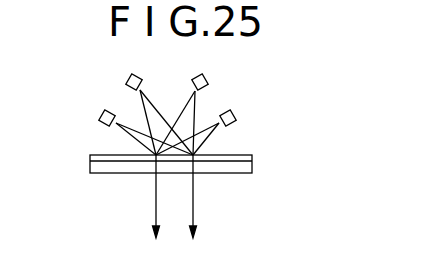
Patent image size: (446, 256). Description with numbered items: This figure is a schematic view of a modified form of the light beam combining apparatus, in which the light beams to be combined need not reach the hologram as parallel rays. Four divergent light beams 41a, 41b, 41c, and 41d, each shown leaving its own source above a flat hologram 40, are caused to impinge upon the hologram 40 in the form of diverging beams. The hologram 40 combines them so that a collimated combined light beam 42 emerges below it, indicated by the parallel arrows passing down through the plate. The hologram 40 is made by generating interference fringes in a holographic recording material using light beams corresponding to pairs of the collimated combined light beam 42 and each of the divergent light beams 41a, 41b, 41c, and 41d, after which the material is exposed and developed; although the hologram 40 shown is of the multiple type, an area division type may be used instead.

The hologram 40 is at (253, 165).
The divergent light beam 41a is at (112, 128).
The divergent light beam 41b is at (131, 96).
The divergent light beam 41c is at (203, 97).
The divergent light beam 41d is at (222, 112).
The collimated combined light beam 42 is at (156, 197).